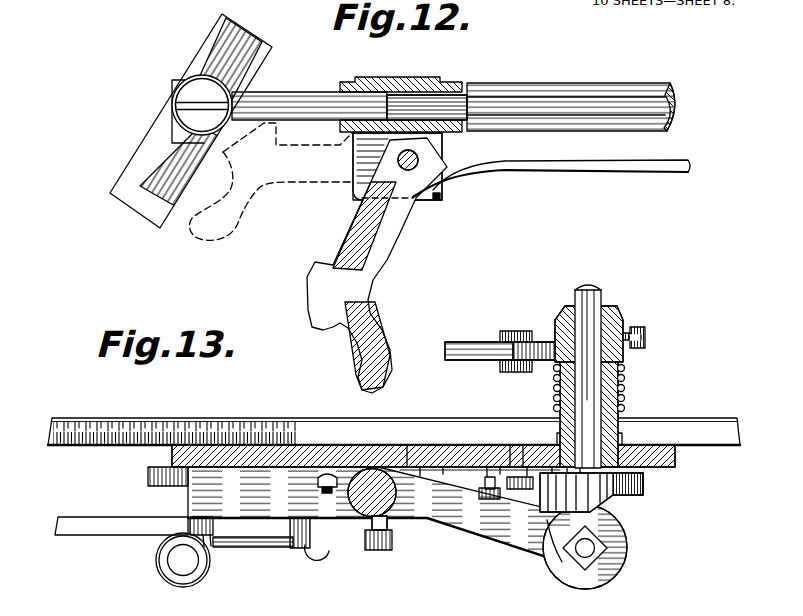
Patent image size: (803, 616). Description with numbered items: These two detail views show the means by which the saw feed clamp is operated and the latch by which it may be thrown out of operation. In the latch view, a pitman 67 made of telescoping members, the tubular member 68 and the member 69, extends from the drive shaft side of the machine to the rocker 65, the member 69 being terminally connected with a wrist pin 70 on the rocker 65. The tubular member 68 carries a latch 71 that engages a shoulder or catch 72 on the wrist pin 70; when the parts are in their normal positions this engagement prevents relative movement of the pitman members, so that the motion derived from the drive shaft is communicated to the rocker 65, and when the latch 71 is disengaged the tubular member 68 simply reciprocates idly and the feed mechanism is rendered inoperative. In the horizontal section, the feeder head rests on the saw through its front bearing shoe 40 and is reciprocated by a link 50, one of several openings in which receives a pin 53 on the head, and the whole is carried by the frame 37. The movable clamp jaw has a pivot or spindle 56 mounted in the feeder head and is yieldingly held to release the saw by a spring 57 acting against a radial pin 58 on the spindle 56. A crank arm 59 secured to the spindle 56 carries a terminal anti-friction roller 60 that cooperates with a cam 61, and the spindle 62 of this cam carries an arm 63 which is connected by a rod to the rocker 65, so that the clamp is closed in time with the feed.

In FIG. 12, the rocker 65 is at (200, 52).
In FIG. 12, the pitman 67 is at (657, 83).
In FIG. 12, the tubular member of the pitman 68 is at (540, 85).
In FIG. 12, the telescoping member of the pitman 69 is at (272, 92).
In FIG. 12, the wrist pin 70 is at (198, 115).
In FIG. 12, the latch 71 is at (357, 292).
In FIG. 12, the shoulder or catch 72 is at (171, 128).
In FIG. 13, the frame 37 is at (207, 422).
In FIG. 13, the front bearing shoe 40 is at (177, 478).
In FIG. 13, the link or pitman 50 is at (107, 525).
In FIG. 13, the pin 53 is at (303, 547).
In FIG. 13, the pivot or spindle 56 is at (390, 516).
In FIG. 13, the spring 57 is at (343, 462).
In FIG. 13, the radial pin 58 is at (330, 480).
In FIG. 13, the crank arm 59 is at (512, 523).
In FIG. 13, the anti-friction roller 60 is at (625, 554).
In FIG. 13, the cam 61 is at (622, 490).
In FIG. 13, the spindle 62 is at (593, 283).
In FIG. 13, the arm 63 is at (620, 318).